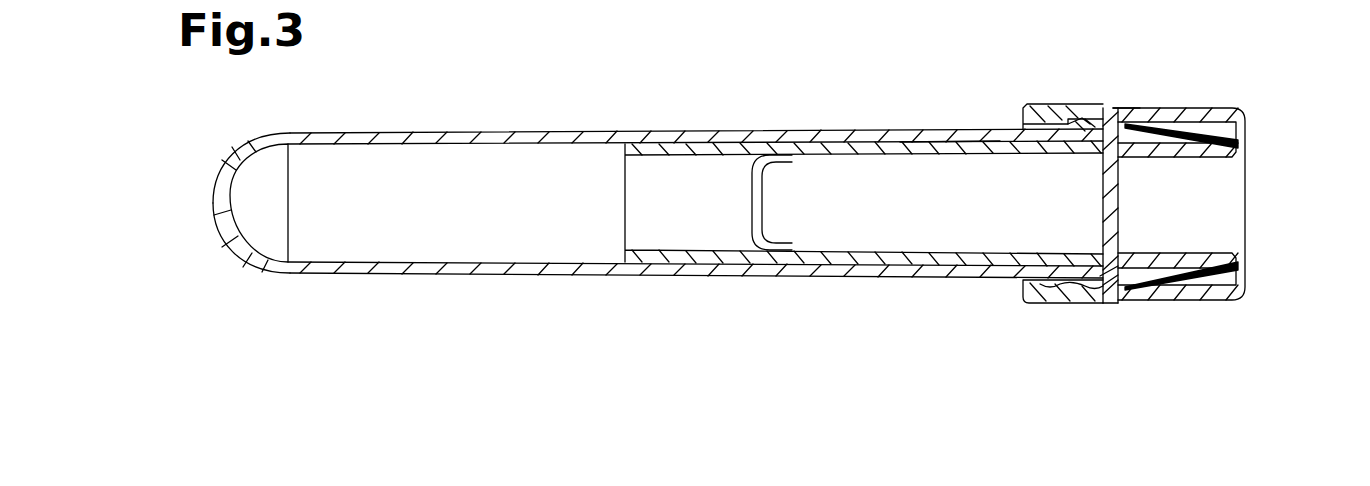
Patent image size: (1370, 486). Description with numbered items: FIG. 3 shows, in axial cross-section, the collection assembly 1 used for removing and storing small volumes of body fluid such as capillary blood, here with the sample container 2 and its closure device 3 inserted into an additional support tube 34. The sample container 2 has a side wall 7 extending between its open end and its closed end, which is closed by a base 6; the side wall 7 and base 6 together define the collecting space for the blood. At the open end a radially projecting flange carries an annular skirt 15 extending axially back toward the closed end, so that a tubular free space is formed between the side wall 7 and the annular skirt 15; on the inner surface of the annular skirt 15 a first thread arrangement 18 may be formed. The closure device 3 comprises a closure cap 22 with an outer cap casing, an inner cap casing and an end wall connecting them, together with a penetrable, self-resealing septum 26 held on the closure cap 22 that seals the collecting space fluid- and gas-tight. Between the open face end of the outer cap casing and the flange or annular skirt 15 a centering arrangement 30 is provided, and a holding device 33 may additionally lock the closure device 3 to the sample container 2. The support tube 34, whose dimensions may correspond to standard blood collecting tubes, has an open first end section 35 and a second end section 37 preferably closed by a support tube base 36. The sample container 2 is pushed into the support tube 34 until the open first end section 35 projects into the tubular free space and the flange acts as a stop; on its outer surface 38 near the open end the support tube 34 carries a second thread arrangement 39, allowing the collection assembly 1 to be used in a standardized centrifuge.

The collection assembly 1 is at (1263, 95).
The sample container 2 is at (882, 183).
The closure device 3 is at (1258, 149).
The base 6 is at (757, 198).
The side wall 7 is at (927, 143).
The annular skirt 15 is at (1077, 113).
The first thread arrangement 18 is at (1047, 290).
The closure cap 22 is at (1262, 267).
The penetrable septum 26 is at (1120, 205).
The centering arrangement 30 is at (1122, 98).
The holding device 33 is at (1110, 305).
The support tube 34 is at (553, 131).
The open first end section 35 is at (1107, 273).
The support tube base 36 is at (236, 196).
The second end section 37 is at (233, 146).
The outer surface 38 is at (778, 128).
The second thread arrangement 39 is at (1086, 108).